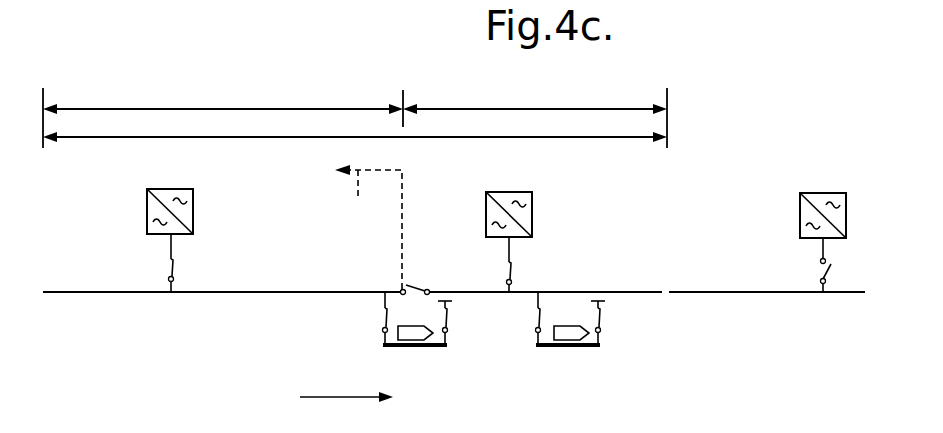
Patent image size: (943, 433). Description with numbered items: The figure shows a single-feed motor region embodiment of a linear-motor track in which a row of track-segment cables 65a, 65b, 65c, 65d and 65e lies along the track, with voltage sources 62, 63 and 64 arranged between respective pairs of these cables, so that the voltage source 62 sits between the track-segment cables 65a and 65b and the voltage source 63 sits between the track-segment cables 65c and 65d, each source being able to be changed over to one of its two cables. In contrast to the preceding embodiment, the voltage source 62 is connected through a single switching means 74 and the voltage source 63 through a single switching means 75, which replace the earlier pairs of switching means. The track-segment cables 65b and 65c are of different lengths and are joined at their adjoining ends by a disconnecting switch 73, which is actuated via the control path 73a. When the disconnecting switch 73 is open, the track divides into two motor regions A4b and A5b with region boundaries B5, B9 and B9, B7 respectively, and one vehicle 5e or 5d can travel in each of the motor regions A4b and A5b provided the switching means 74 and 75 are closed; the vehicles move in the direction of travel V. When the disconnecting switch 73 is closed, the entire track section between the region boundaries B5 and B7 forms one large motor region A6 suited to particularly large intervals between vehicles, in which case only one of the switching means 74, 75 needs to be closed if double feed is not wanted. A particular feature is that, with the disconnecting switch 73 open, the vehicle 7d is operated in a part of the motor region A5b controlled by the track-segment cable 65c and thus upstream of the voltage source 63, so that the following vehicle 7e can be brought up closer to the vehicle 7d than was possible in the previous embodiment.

The region boundary B5 is at (44, 100).
The region boundary B9 is at (404, 97).
The region boundary B7 is at (668, 99).
The motor region A4b is at (223, 97).
The motor region A5b is at (535, 97).
The motor region A6 is at (355, 147).
The voltage source 62 is at (147, 208).
The voltage source 63 is at (513, 192).
The voltage source 64 is at (824, 192).
The switching means 74 is at (168, 268).
The switching means 75 is at (512, 268).
The disconnecting switch 73 is at (419, 286).
The switch control signal 73a is at (358, 203).
The track-segment cable 65a is at (73, 294).
The track-segment cable 65b is at (248, 294).
The track-segment cable 65c is at (480, 294).
The track-segment cable 65d is at (652, 294).
The track-segment cable 65e is at (767, 294).
The vehicle 5e is at (385, 355).
The vehicle 5d is at (587, 343).
The vehicle 7e is at (385, 324).
The vehicle 7d is at (566, 326).
The direction of travel V is at (348, 390).